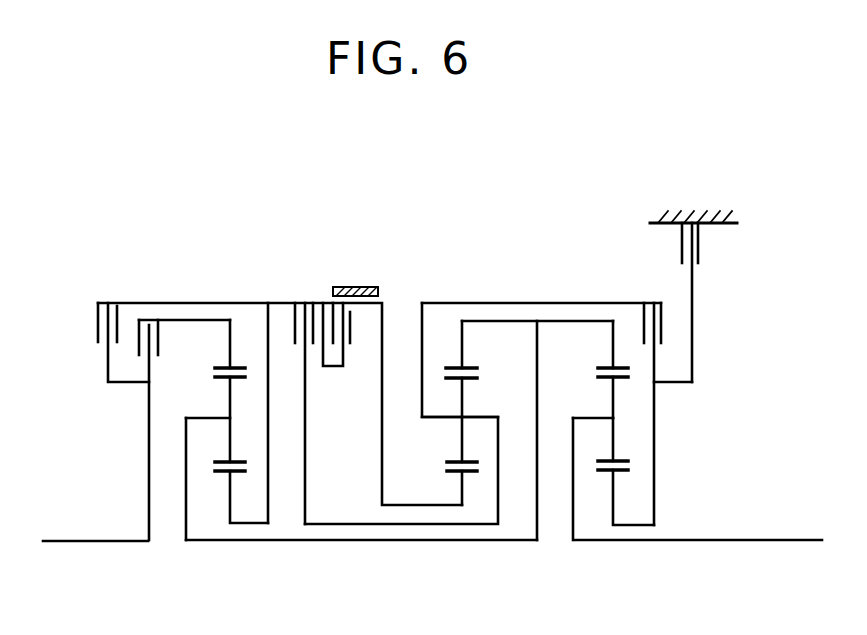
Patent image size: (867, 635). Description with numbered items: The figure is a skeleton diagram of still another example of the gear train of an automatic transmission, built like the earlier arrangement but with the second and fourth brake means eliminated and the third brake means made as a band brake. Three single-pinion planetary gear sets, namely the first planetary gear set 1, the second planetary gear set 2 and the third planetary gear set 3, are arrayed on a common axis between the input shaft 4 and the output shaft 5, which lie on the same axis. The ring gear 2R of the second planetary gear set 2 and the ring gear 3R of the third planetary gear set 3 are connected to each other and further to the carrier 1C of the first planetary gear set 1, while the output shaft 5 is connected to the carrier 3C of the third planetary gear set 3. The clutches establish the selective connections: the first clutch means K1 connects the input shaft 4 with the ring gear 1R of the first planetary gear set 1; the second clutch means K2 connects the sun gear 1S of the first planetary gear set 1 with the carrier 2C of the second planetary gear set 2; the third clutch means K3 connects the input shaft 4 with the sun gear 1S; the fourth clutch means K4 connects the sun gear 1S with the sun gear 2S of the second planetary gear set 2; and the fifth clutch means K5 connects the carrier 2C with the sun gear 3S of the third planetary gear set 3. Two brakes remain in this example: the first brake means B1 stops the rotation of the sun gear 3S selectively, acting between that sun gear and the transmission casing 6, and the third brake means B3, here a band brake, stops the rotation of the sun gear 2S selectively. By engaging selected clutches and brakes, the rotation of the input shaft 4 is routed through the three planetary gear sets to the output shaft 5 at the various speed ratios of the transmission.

The first clutch means K1 is at (184, 430).
The second clutch means K2 is at (304, 400).
The third clutch means K3 is at (121, 328).
The fourth clutch means K4 is at (350, 334).
The fifth clutch means K5 is at (663, 399).
The first brake means B1 is at (700, 283).
The third brake means B3 is at (355, 277).
The first planetary gear set 1 is at (216, 448).
The ring gear of the first planetary gear set 1R is at (241, 413).
The carrier of the first planetary gear set 1C is at (206, 466).
The sun gear of the first planetary gear set 1S is at (241, 450).
The second planetary gear set 2 is at (446, 455).
The ring gear of the second planetary gear set 2R is at (473, 349).
The carrier of the second planetary gear set 2C is at (461, 397).
The sun gear of the second planetary gear set 2S is at (449, 461).
The third planetary gear set 3 is at (600, 458).
The ring gear of the third planetary gear set 3R is at (599, 349).
The carrier of the third planetary gear set 3C is at (591, 458).
The sun gear of the third planetary gear set 3S is at (626, 471).
The input shaft 4 is at (94, 540).
The output shaft 5 is at (728, 540).
The transmission casing 6 is at (713, 222).